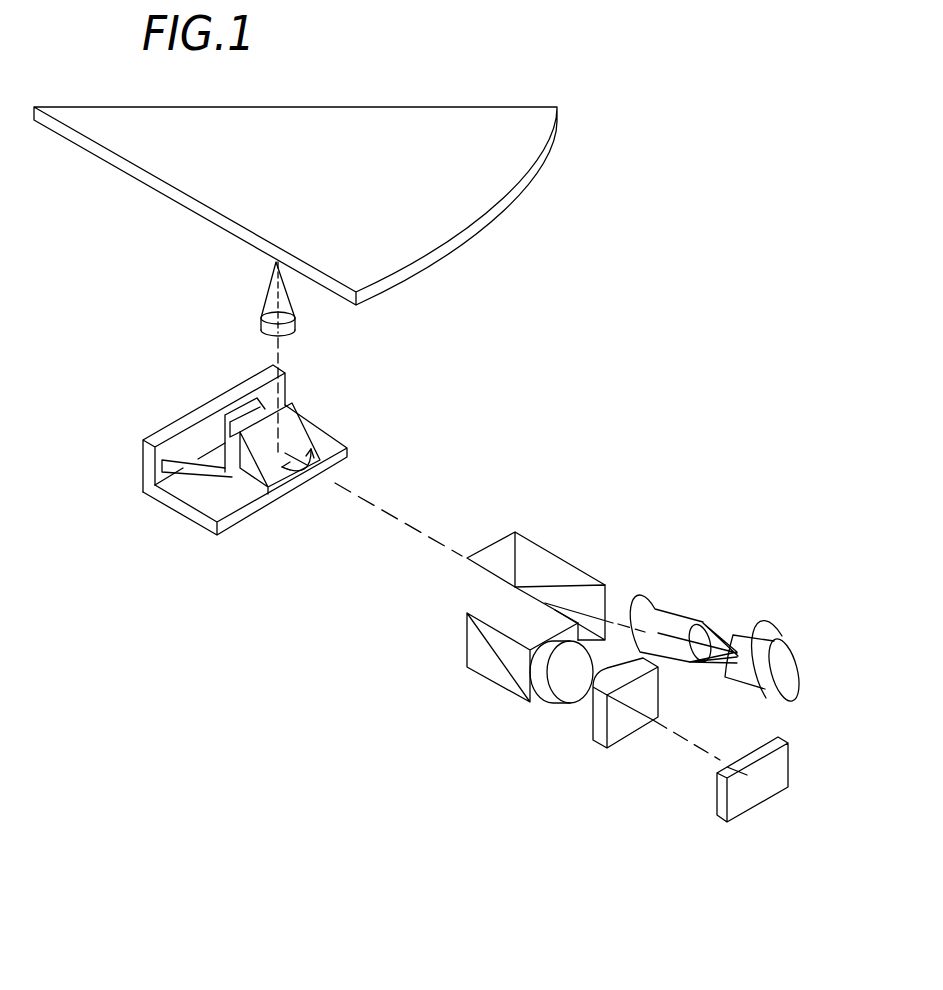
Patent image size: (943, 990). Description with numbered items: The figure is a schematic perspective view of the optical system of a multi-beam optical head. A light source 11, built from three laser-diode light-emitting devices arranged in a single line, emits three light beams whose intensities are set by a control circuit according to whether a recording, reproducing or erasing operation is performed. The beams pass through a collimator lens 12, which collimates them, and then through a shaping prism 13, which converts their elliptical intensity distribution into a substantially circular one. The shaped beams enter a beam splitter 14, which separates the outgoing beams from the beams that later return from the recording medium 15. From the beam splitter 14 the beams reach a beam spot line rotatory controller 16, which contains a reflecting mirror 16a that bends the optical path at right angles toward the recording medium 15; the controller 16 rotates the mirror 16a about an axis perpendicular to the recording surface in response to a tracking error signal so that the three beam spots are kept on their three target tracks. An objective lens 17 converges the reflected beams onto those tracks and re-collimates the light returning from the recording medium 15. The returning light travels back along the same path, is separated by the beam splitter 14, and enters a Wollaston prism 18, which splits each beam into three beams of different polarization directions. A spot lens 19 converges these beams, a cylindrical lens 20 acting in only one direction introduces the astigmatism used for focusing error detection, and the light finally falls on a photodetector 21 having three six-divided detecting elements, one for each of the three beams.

The light source 11 is at (790, 668).
The collimator lens 12 is at (683, 615).
The shaping prism 13 is at (558, 567).
The beam splitter 14 is at (503, 550).
The recording medium 15 is at (433, 126).
The beam spot line rotatory controller 16 is at (133, 363).
The reflecting mirror 16a is at (290, 438).
The objective lens 17 is at (262, 322).
The Wollaston prism 18 is at (482, 662).
The spot lens 19 is at (567, 690).
The cylindrical lens 20 is at (627, 727).
The photodetector 21 is at (758, 797).